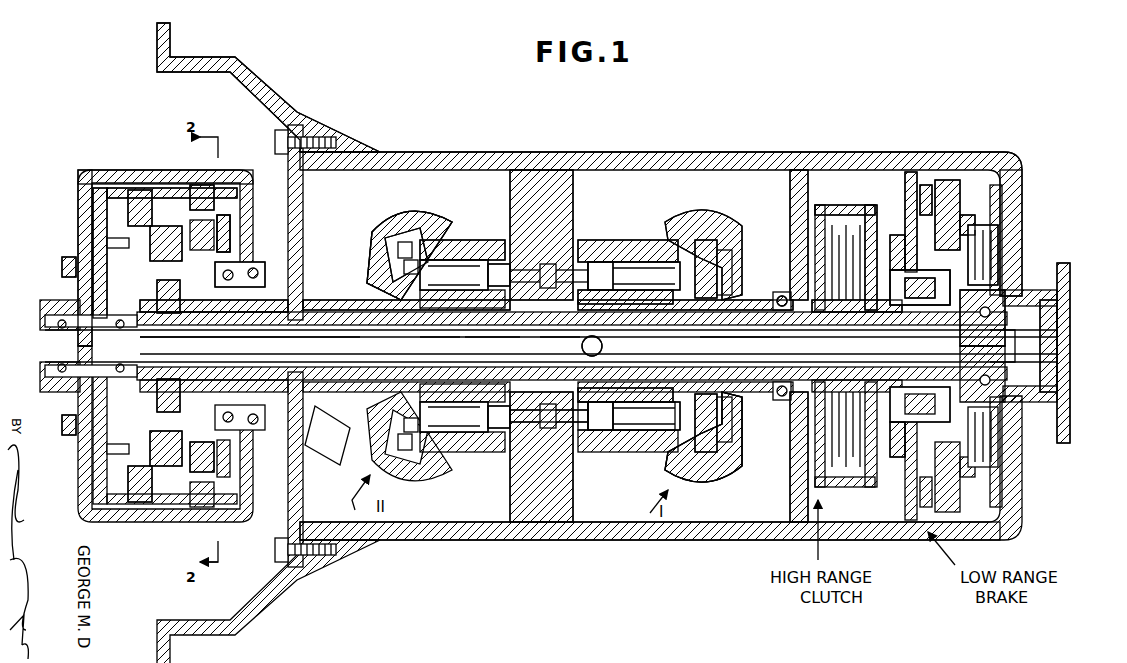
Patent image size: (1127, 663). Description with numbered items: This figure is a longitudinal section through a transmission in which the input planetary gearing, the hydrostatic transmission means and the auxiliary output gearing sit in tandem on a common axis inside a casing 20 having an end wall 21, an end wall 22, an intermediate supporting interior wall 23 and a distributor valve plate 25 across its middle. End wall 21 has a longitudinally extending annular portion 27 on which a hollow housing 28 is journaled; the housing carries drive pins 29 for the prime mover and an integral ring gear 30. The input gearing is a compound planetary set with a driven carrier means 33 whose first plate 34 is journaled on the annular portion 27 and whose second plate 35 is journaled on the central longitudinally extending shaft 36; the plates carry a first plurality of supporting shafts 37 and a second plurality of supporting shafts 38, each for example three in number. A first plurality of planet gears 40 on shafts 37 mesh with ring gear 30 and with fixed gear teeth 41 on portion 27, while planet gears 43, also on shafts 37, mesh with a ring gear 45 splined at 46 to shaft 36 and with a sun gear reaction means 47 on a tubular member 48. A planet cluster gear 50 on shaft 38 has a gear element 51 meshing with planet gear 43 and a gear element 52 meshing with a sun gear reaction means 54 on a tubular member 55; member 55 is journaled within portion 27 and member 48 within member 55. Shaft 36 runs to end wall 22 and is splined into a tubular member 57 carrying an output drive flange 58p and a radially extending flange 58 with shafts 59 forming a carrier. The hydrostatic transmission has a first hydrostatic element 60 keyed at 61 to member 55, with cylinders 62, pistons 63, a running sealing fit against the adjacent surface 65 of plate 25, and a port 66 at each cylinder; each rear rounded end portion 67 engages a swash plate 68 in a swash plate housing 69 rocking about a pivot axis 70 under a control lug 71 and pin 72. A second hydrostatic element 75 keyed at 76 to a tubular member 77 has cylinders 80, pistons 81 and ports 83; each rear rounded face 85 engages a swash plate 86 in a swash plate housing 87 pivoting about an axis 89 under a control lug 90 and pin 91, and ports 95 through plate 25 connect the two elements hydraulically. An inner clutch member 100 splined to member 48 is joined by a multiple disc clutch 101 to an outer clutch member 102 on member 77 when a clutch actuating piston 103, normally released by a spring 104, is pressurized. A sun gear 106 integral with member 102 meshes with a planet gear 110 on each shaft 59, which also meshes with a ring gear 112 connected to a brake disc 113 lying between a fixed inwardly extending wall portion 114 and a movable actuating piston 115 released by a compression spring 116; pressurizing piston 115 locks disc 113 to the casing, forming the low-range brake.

The casing 20 is at (648, 152).
The end wall 21 is at (303, 210).
The end wall 22 is at (1022, 210).
The intermediate supporting interior wall 23 is at (798, 476).
The distributor valve plate 25 is at (650, 522).
The longitudinally extending annular portion 27 is at (338, 320).
The hollow housing 28 is at (124, 170).
The drive pins 29 is at (66, 258).
The ring gear 30 is at (215, 200).
The driven carrier means 33 is at (232, 232).
The first plate 34 is at (240, 262).
The second plate 35 is at (106, 280).
The central longitudinally extending shaft 36 is at (265, 346).
The first plurality of supporting shafts 37 is at (162, 245).
The second plurality of supporting shafts 38 is at (185, 445).
The first plurality of planet gears 40 is at (235, 215).
The fixed gear teeth 41 is at (220, 346).
The planet gears 43 is at (128, 200).
The ring gear 45 is at (145, 188).
The spline 46 is at (170, 346).
The sun gear reaction means 47 is at (105, 300).
The tubular member 48 is at (303, 346).
The planet cluster gear 50 is at (190, 486).
The gear element 51 is at (138, 480).
The gear element 52 is at (172, 490).
The sun gear reaction means 54 is at (168, 300).
The tubular member 55 is at (345, 305).
The tubular member 57 is at (1062, 340).
The radially extending flange 58 is at (990, 298).
The output drive flange 58p is at (1066, 300).
The shafts 59 is at (852, 500).
The first hydrostatic element 60 is at (470, 230).
The key 61 is at (560, 346).
The cylinders 62 is at (497, 262).
The pistons 63 is at (400, 465).
The adjacent surface 65 is at (510, 508).
The port 66 is at (488, 430).
The rear rounded end portion 67 is at (410, 240).
The swash plate 68 is at (385, 300).
The swash plate housing 69 is at (385, 225).
The pivot axis 70 is at (400, 350).
The control lug 71 is at (458, 345).
The pin 72 is at (493, 346).
The second hydrostatic element 75 is at (600, 240).
The key 76 is at (648, 290).
The tubular member 77 is at (720, 312).
The cylinders 80 is at (612, 472).
The pistons 81 is at (634, 346).
The port 83 is at (590, 432).
The rear rounded face 85 is at (698, 268).
The swash plate 86 is at (720, 400).
The swash plate housing 87 is at (742, 436).
The pivot axis 89 is at (690, 342).
The control lug 90 is at (616, 346).
The pin 91 is at (644, 416).
The ports 95 is at (575, 258).
The inner clutch member 100 is at (848, 320).
The multiple disc clutch 101 is at (810, 230).
The outer clutch member 102 is at (830, 215).
The clutch actuating piston 103 is at (862, 220).
The spring 104 is at (870, 318).
The sun gear 106 is at (920, 312).
The planet gear 110 is at (890, 500).
The ring gear 112 is at (952, 245).
The brake disc 113 is at (905, 195).
The fixed inwardly extending wall portion 114 is at (912, 172).
The movable actuating piston 115 is at (948, 190).
The compression spring 116 is at (985, 236).